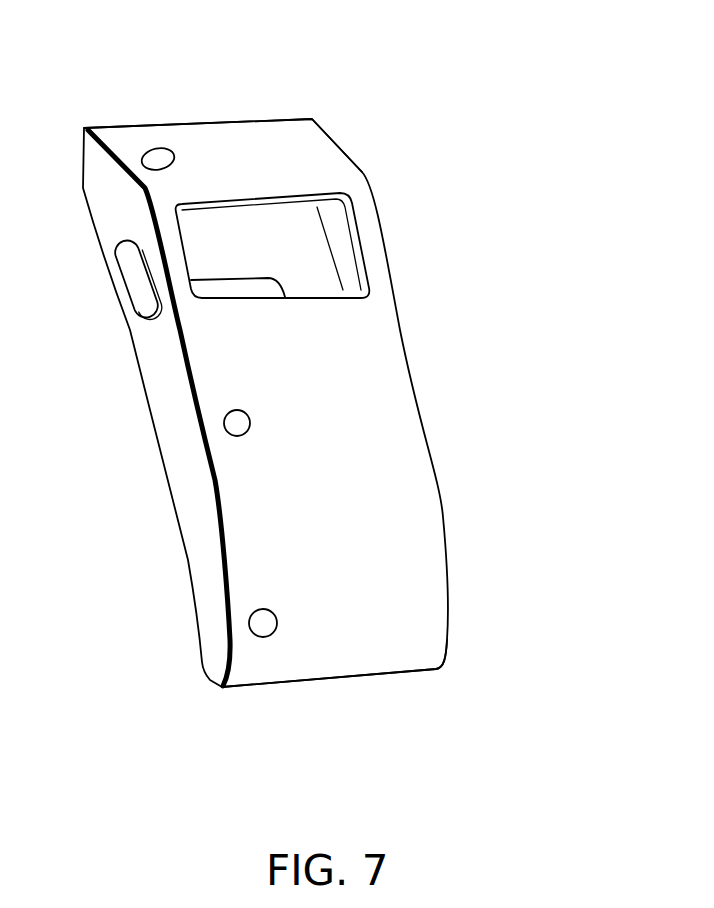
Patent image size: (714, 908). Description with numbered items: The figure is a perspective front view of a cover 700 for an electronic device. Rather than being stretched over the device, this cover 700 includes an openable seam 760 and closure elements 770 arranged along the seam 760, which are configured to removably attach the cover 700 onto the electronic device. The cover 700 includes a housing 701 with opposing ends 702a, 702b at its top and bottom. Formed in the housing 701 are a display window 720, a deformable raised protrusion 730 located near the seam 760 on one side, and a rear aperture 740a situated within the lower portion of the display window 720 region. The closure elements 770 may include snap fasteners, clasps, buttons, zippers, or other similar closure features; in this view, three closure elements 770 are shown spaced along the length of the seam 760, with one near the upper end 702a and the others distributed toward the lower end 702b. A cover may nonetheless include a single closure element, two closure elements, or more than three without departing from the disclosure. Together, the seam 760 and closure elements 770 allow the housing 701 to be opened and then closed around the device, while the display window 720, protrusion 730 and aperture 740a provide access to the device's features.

The cover 700 is at (446, 90).
The housing 701 is at (268, 170).
The opposing end 702a is at (327, 119).
The opposing end 702b is at (452, 667).
The display window 720 is at (359, 235).
The deformable raised protrusion 730 is at (127, 268).
The rear aperture 740a is at (292, 286).
The openable seam 760 is at (210, 489).
The closure elements 770 is at (168, 149).